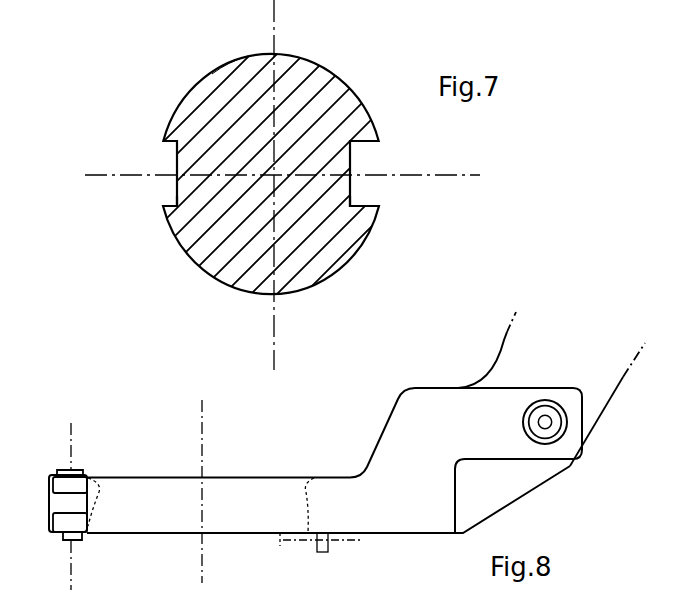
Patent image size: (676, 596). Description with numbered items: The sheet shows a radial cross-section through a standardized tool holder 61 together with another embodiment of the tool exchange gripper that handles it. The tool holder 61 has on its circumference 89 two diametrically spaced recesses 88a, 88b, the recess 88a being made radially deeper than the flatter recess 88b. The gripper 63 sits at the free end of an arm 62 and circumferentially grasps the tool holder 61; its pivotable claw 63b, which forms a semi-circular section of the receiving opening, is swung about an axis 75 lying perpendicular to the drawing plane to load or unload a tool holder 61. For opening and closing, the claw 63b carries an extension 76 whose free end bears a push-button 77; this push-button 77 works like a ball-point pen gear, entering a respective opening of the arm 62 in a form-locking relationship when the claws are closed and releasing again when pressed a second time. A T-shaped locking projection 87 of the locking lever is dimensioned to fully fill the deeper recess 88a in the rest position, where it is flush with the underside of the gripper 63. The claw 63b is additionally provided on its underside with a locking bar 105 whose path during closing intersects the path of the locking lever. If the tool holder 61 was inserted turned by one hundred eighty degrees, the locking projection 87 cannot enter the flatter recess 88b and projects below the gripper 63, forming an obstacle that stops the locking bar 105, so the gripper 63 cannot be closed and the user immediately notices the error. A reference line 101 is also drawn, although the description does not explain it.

In FIG. 7, the tool holder 61 is at (335, 71).
In FIG. 7, the circumference 89 is at (232, 63).
In FIG. 7, the recess 88a is at (359, 203).
In FIG. 7, the recess 88b is at (168, 202).
In FIG. 8, the arm 62 is at (518, 306).
In FIG. 8, the gripper 63 is at (322, 477).
In FIG. 8, the claw 63b is at (163, 490).
In FIG. 8, the axis 75 is at (70, 584).
In FIG. 8, the axis 101 is at (203, 405).
In FIG. 8, the locking bar 105 is at (329, 540).
In FIG. 8, the locking projection 87 is at (284, 547).
In FIG. 8, the extension 76 is at (423, 517).
In FIG. 8, the push-button 77 is at (560, 421).